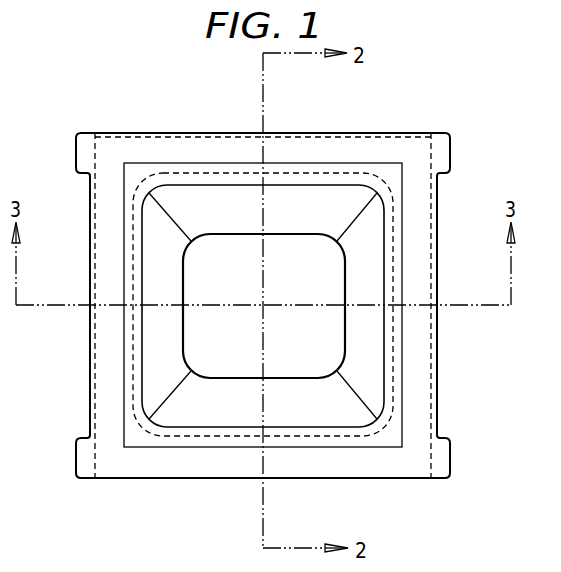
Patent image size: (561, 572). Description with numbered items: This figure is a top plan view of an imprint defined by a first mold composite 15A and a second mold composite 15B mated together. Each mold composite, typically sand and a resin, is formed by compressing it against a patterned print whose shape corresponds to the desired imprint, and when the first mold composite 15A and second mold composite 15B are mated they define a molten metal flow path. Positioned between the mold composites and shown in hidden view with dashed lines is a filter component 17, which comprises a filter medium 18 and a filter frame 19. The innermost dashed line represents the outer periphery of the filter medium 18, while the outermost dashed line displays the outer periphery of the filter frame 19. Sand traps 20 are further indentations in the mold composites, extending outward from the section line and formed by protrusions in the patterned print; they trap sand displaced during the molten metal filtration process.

The filter component 17 is at (146, 106).
The first mold composite 15A is at (158, 479).
The second mold composite 15B is at (403, 480).
The filter medium 18 is at (372, 182).
The filter frame 19 is at (97, 366).
The sand traps 20 is at (450, 462).